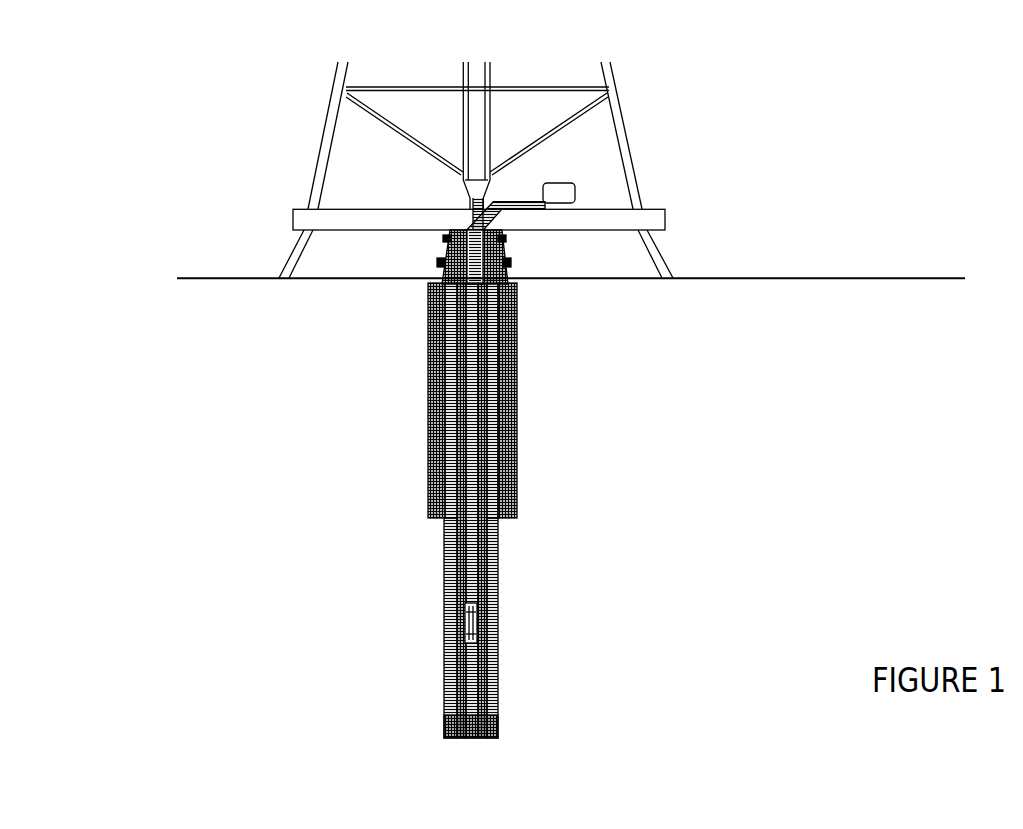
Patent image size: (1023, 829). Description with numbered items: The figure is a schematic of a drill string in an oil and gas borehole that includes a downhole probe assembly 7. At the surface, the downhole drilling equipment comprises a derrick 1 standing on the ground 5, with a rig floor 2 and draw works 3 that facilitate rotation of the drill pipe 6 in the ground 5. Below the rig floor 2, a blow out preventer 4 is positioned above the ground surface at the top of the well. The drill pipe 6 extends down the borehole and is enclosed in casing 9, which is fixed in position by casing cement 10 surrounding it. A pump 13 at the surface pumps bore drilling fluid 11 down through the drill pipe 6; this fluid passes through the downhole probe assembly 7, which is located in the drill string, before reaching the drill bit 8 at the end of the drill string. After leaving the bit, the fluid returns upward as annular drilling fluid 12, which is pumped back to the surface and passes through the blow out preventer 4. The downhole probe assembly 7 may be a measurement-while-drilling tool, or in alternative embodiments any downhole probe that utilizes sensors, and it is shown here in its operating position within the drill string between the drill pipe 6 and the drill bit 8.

The derrick 1 is at (323, 142).
The rig floor 2 is at (340, 205).
The draw works 3 is at (461, 183).
The blow out preventer (BOP) 4 is at (447, 247).
The ground 5 is at (203, 277).
The drill pipe 6 is at (445, 493).
The downhole probe assembly 7 is at (452, 618).
The drill bit 8 is at (447, 737).
The casing 9 is at (445, 428).
The casing cement 10 is at (430, 381).
The bore drilling fluid 11 is at (447, 551).
The annular drilling fluid 12 is at (447, 522).
The pump 13 is at (578, 178).